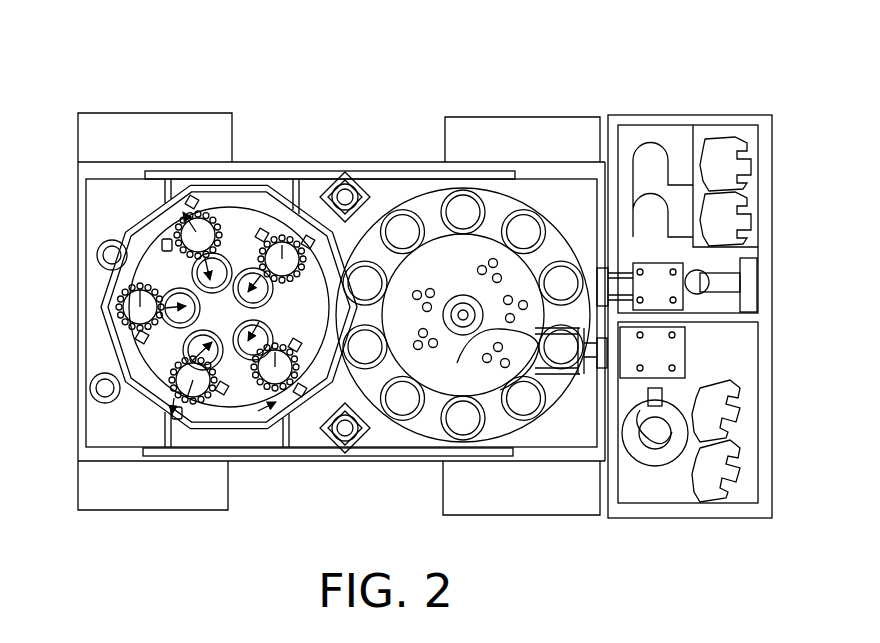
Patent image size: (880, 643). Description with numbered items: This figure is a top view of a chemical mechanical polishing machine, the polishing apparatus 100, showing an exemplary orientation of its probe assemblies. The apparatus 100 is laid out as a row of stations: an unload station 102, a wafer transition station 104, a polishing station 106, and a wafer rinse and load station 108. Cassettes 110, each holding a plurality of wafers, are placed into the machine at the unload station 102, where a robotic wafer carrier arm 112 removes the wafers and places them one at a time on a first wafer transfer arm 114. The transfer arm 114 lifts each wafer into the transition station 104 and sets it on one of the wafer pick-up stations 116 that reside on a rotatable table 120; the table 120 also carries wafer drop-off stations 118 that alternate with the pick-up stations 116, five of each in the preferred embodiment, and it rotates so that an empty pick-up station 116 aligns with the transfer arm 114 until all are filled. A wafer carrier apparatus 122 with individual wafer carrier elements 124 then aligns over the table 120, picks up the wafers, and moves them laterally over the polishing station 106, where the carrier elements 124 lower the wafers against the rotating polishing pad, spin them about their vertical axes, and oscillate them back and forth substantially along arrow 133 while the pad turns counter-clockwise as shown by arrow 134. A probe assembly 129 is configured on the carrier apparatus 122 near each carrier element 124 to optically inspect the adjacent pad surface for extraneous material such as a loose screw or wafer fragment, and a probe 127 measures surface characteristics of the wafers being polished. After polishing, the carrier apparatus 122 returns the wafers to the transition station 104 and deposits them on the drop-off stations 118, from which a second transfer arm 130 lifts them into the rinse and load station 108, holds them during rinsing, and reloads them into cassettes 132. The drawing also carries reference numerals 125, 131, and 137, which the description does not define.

The polishing apparatus 100 is at (484, 82).
The unload station 102 is at (702, 492).
The wafer transition station 104 is at (522, 442).
The polishing station 106 is at (258, 160).
The wafer rinse and load station 108 is at (736, 110).
The cassettes 110 is at (740, 412).
The robotic wafer carrier arm 112 is at (662, 455).
The first wafer transfer arm 114 is at (578, 378).
The wafer pick-up stations 116 is at (407, 228).
The wafer drop-off stations 118 is at (464, 220).
The rotatable table 120 is at (438, 428).
The wafer carrier apparatus 122 is at (272, 448).
The wafer carrier elements 124 is at (193, 215).
The pads 125 is at (164, 238).
The probe 127 is at (183, 210).
The probe assembly 129 is at (262, 228).
The second transfer arm 130 is at (598, 268).
The pivot 131 is at (104, 245).
The cassettes 132 is at (736, 146).
The arrow 133 is at (162, 318).
The arrow 134 is at (330, 438).
The pivot 137 is at (104, 402).